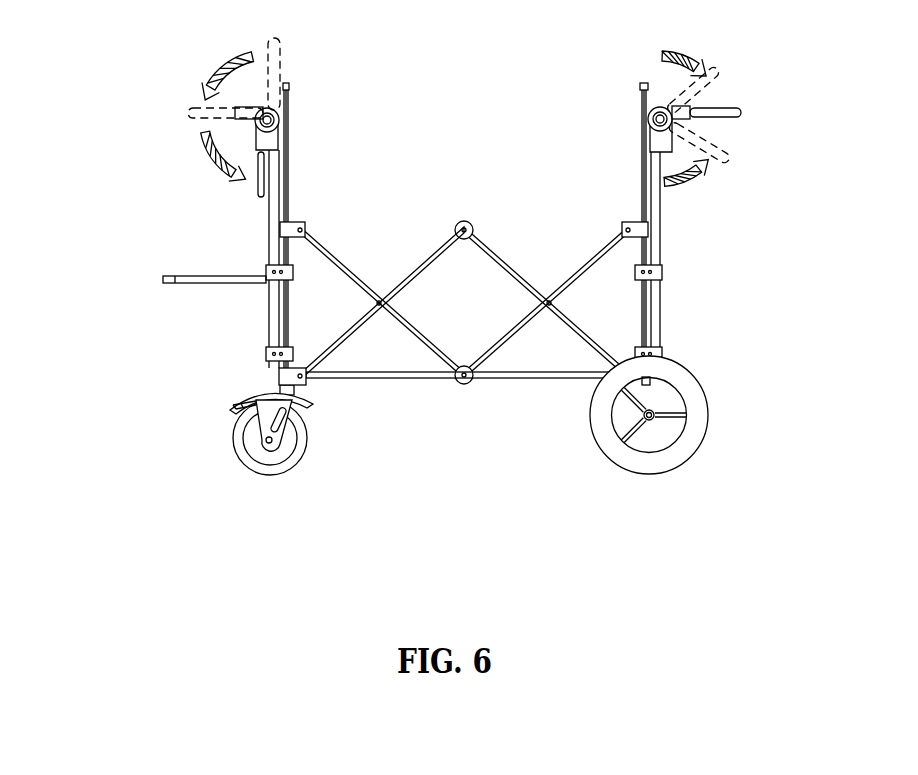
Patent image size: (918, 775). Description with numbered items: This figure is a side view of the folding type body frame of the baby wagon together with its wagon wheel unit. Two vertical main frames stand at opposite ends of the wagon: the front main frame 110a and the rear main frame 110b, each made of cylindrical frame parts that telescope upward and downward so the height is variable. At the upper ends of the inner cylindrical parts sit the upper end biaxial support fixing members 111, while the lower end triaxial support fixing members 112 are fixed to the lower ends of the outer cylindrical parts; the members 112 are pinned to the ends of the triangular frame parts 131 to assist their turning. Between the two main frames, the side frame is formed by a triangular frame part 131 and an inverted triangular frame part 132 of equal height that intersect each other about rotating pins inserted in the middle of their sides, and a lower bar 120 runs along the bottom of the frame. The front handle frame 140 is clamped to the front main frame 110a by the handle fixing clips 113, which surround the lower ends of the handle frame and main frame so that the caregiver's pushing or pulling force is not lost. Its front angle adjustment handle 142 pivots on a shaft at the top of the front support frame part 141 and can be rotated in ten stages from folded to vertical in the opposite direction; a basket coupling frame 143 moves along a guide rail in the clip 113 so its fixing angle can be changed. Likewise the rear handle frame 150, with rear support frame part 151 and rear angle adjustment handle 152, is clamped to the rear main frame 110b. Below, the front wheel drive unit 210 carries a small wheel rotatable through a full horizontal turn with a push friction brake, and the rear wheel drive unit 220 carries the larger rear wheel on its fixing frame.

The front main frame 110a is at (287, 303).
The rear main frame 110b is at (642, 335).
The upper end biaxial support fixing member 111 is at (283, 224).
The lower end triaxial support fixing member 112 is at (290, 375).
The handle fixing clip 113 is at (268, 273).
The bottom frame bar 120 is at (390, 375).
The triangular frame part 131 is at (498, 255).
The inverted triangular frame part 132 is at (508, 340).
The front handle frame 140 is at (154, 160).
The front support frame part 141 is at (272, 207).
The front angle adjustment handle 142 is at (262, 167).
The basket coupling frame 143 is at (218, 278).
The rear handle frame 150 is at (757, 180).
The rear support frame part 151 is at (653, 242).
The rear angle adjustment handle 152 is at (708, 113).
The front wheel drive unit 210 is at (258, 450).
The rear wheel drive unit 220 is at (645, 463).